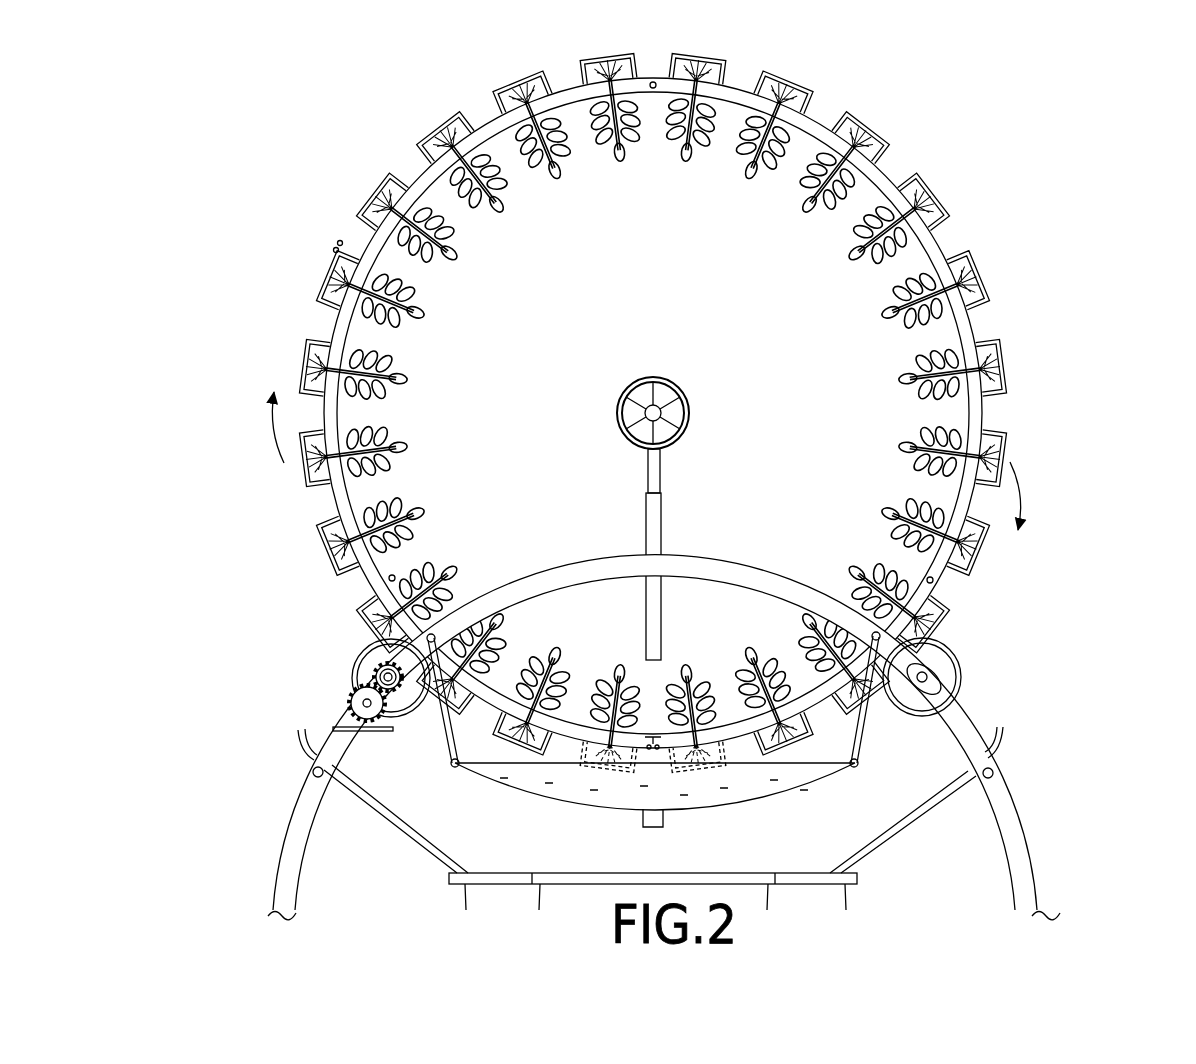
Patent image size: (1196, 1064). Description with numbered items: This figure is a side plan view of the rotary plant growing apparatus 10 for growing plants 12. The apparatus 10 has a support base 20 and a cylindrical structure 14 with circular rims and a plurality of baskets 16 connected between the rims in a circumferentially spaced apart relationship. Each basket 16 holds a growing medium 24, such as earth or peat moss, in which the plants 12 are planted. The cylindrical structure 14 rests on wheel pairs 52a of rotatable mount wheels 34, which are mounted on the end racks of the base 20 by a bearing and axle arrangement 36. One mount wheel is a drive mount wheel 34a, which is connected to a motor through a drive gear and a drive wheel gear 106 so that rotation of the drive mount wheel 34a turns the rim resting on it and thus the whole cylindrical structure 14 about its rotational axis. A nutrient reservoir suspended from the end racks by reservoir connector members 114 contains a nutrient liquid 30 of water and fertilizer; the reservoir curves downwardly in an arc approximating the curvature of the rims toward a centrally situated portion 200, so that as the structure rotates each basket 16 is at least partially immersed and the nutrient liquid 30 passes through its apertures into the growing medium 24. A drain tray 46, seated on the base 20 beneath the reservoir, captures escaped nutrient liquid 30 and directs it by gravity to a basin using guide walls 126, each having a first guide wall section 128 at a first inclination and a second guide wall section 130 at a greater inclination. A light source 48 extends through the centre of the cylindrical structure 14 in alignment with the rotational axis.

The rotary plant growing apparatus 10 is at (232, 152).
The plants 12 is at (624, 150).
The cylindrical structure 14 is at (965, 220).
The basket 16 is at (996, 290).
The support base 20 is at (1064, 766).
The growing medium 24 is at (1002, 396).
The nutrient liquid 30 is at (518, 772).
The mount wheels 34 is at (956, 650).
The drive mount wheel 34a is at (364, 656).
The bearing and axle arrangement 36 is at (962, 694).
The drain tray 46 is at (845, 897).
The light source 48 is at (686, 360).
The wheel pair 52a is at (356, 628).
The drive wheel gear 106 is at (416, 704).
The reservoir connector member 114 is at (864, 744).
The guide wall 126 is at (922, 812).
The first guide wall section 128 is at (893, 825).
The second guide wall section 130 is at (988, 740).
The centrally situated portion 200 is at (664, 828).